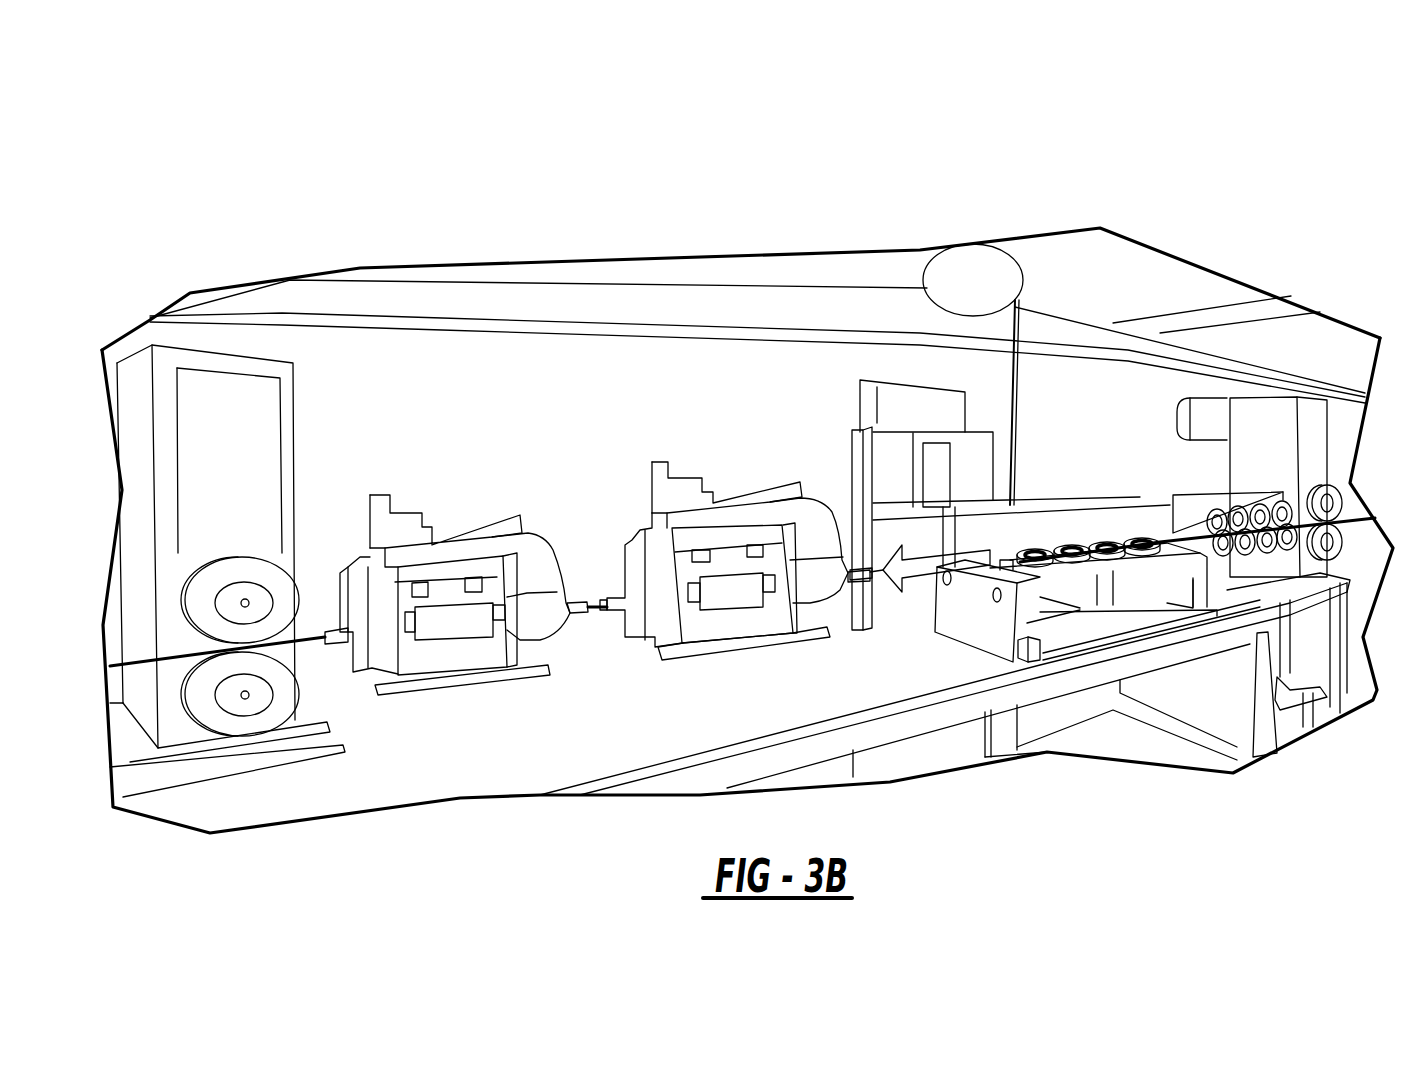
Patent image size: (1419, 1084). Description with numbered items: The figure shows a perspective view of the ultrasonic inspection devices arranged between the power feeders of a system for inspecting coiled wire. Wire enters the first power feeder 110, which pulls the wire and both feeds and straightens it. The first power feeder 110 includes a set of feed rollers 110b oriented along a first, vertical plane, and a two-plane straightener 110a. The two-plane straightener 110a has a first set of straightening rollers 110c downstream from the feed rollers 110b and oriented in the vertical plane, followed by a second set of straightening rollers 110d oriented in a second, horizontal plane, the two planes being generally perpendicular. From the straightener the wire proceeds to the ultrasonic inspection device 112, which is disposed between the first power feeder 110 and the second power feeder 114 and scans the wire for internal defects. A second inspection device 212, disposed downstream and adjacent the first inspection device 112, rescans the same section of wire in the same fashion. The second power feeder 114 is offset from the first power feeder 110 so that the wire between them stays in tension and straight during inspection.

The first power feeder 110 is at (1366, 226).
The two-plane straightener 110a is at (1247, 540).
The set of feed rollers 110b is at (1313, 448).
The first set of straightening rollers 110c is at (1226, 505).
The second set of straightening rollers 110d is at (1087, 545).
The ultrasonic inspection device 112 is at (747, 517).
The second power feeder 114 is at (180, 268).
The second inspection device 212 is at (445, 522).